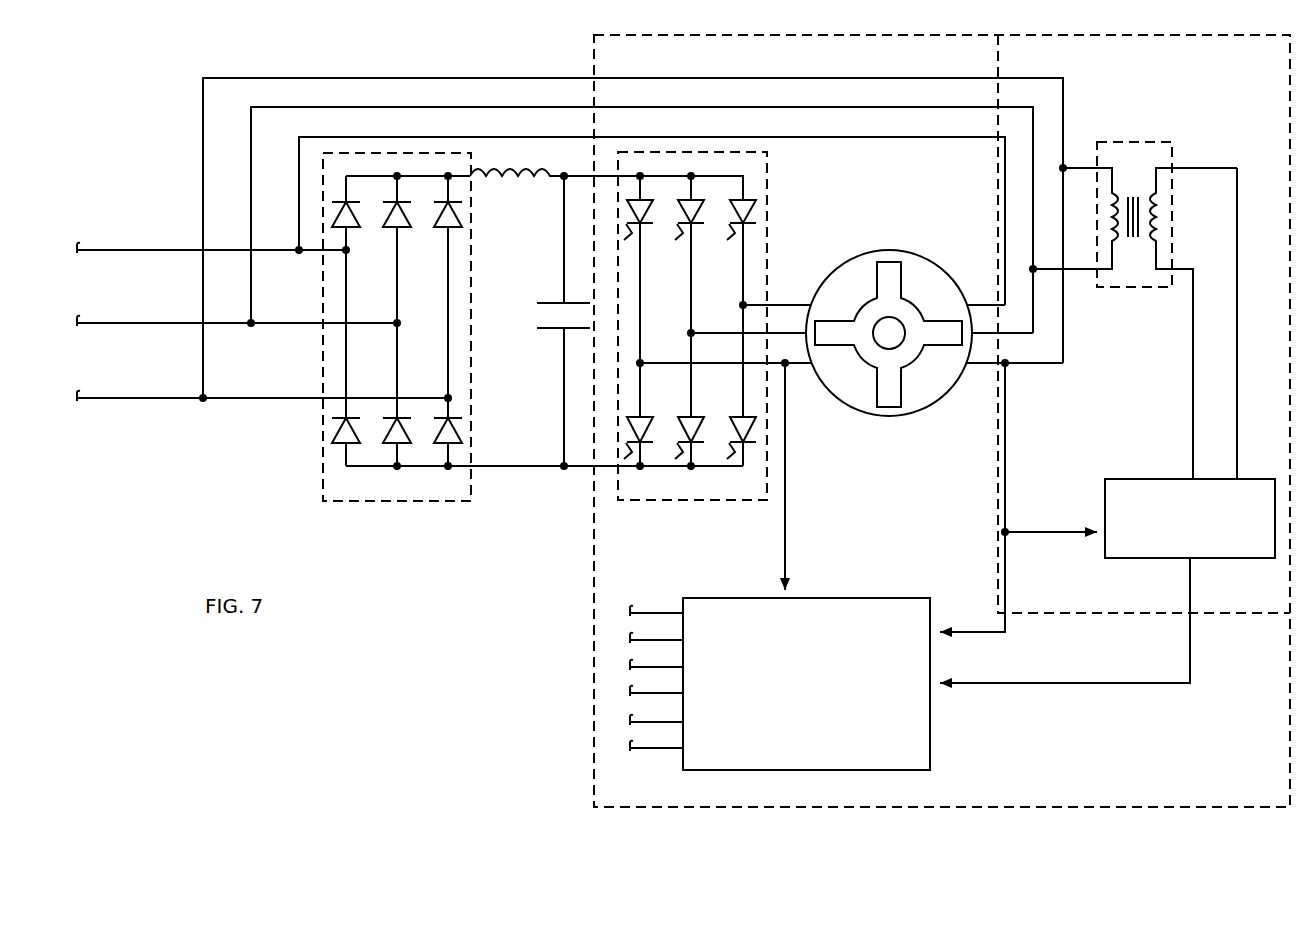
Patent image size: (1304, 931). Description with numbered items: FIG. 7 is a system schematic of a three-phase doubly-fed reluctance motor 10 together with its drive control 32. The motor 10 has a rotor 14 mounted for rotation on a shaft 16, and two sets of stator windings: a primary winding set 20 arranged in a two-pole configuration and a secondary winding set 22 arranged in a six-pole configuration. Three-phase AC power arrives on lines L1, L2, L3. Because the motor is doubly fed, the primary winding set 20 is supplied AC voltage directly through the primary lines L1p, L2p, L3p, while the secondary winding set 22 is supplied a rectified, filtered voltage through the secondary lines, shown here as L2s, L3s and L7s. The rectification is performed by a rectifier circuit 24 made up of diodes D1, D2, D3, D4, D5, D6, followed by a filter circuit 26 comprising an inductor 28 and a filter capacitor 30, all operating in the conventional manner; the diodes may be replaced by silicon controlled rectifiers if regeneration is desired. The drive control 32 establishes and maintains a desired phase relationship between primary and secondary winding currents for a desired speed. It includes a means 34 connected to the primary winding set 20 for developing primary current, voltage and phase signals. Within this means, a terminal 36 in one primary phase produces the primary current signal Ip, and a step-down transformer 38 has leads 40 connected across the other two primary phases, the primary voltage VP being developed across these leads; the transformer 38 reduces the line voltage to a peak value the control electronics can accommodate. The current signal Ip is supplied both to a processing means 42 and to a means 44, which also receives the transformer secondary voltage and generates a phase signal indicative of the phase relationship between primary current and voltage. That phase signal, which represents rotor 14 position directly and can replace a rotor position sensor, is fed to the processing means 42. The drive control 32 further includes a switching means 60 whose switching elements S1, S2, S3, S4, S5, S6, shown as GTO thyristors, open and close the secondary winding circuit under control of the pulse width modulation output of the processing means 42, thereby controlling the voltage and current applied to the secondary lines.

The doubly-fed reluctance motor 10 is at (889, 304).
The rotor 14 is at (908, 262).
The shaft 16 is at (831, 332).
The primary winding set 20 is at (980, 376).
The secondary winding set 22 is at (800, 376).
The rectifier circuit 24 is at (499, 354).
The filter circuit 26 is at (524, 341).
The inductor 28 is at (550, 172).
The filter capacitor 30 is at (552, 328).
The drive control 32 is at (822, 812).
The means for developing primary winding signals 34 is at (1236, 640).
The terminal 36 is at (1011, 368).
The step-down transformer 38 is at (1101, 272).
The leads 40 is at (1073, 269).
The processing means 42 is at (887, 590).
The phase signal generating means 44 is at (1134, 470).
The switching means 60 is at (645, 353).
The diode D1 is at (350, 230).
The diode D2 is at (332, 421).
The diode D3 is at (401, 230).
The diode D4 is at (387, 448).
The diode D5 is at (452, 230).
The diode D6 is at (440, 448).
The switching element S1 is at (627, 201).
The switching element S2 is at (627, 418).
The switching element S3 is at (678, 201).
The switching element S4 is at (679, 417).
The switching element S5 is at (730, 201).
The switching element S6 is at (731, 417).
The AC supply line L1 is at (162, 404).
The AC supply line L2 is at (152, 333).
The AC supply line L3 is at (165, 262).
The primary winding line L1p is at (353, 137).
The primary winding line L2p is at (452, 107).
The primary winding line L3p is at (540, 78).
The secondary winding line L2s is at (693, 333).
The secondary winding line L3s is at (657, 361).
The secondary line 7 L7s is at (781, 305).
The primary voltage VP is at (1232, 380).
The primary current signal Ip is at (1005, 470).